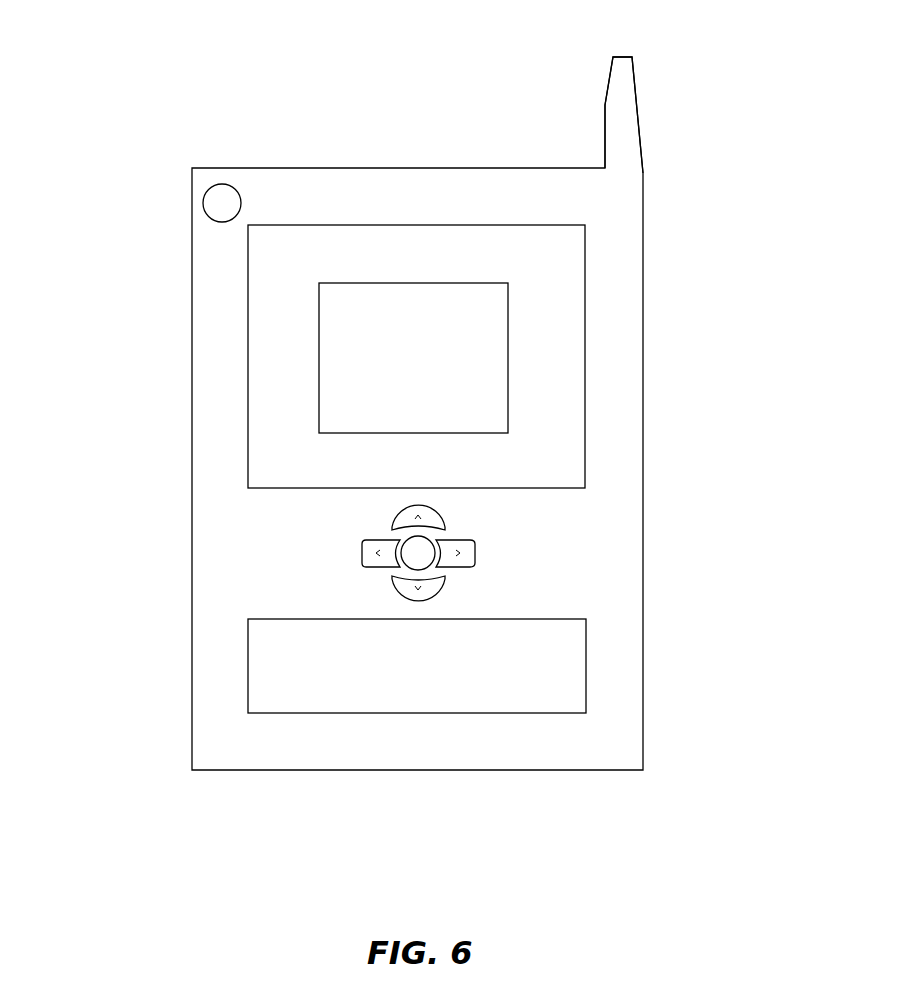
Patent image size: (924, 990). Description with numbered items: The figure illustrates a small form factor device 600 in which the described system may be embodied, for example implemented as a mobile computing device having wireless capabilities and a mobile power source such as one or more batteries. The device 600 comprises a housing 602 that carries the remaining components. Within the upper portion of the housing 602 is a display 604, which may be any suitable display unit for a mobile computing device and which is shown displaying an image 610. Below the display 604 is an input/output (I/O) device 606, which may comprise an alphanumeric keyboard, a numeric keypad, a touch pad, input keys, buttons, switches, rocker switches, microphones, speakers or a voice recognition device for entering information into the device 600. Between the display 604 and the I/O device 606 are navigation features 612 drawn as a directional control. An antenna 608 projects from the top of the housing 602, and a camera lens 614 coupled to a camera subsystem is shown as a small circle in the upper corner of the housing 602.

The small form factor device 600 is at (210, 78).
The housing 602 is at (643, 470).
The display 604 is at (585, 243).
The input/output (I/O) device 606 is at (586, 657).
The antenna 608 is at (608, 105).
The image 610 is at (508, 381).
The navigation features 612 is at (488, 545).
The speaker 614 is at (202, 203).